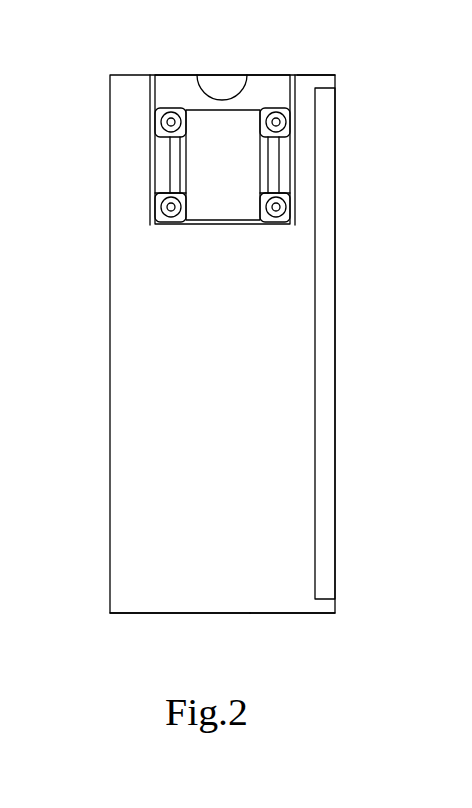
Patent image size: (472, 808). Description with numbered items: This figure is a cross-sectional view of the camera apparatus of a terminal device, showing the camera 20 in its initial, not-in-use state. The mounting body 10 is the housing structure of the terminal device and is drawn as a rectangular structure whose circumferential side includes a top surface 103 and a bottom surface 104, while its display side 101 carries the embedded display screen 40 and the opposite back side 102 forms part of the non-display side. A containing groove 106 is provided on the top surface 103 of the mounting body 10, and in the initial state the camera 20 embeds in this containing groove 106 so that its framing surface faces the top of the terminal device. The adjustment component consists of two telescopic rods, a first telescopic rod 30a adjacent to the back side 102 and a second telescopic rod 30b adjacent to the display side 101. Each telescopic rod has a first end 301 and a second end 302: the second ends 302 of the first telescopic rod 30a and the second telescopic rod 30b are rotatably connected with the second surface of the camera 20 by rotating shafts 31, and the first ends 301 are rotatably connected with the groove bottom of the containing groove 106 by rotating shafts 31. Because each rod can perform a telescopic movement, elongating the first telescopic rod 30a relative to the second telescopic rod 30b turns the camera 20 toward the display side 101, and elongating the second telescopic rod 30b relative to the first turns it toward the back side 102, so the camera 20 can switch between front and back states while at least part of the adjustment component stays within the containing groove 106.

The mounting body 10 is at (97, 448).
The camera 20 is at (191, 66).
The first telescopic rod 30a is at (158, 168).
The second telescopic rod 30b is at (290, 168).
The rotating shaft 31 is at (160, 118).
The display screen 40 is at (335, 330).
The display side 101 is at (335, 608).
The back side 102 is at (110, 287).
The top surface 103 is at (312, 75).
The bottom surface 104 is at (218, 613).
The containing groove 106 is at (213, 202).
The first end 301 is at (238, 73).
The second end 302 is at (170, 140).